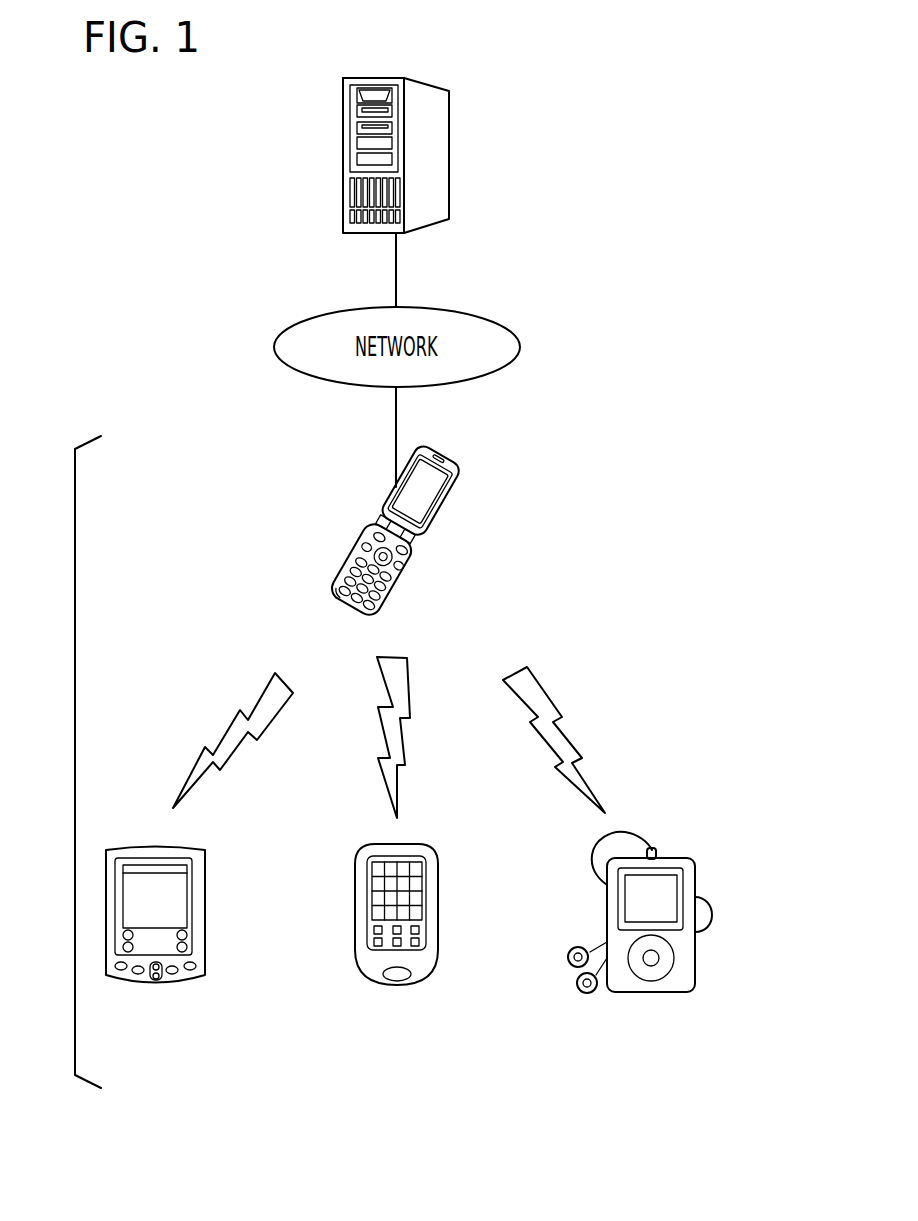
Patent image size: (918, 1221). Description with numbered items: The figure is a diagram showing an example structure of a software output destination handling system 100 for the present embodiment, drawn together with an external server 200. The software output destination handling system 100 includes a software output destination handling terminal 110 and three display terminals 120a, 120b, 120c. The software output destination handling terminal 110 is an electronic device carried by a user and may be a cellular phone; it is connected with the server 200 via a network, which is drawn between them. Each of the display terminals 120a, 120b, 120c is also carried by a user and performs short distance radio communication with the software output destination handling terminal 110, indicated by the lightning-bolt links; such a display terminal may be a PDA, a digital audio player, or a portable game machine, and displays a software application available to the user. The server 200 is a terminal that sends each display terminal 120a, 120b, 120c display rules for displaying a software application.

The software output destination handling system 100 is at (63, 783).
The server 200 is at (449, 155).
The software output destination handling terminal 110 is at (453, 495).
The display terminal 120a is at (168, 985).
The display terminal 120b is at (401, 987).
The display terminal 120c is at (652, 993).